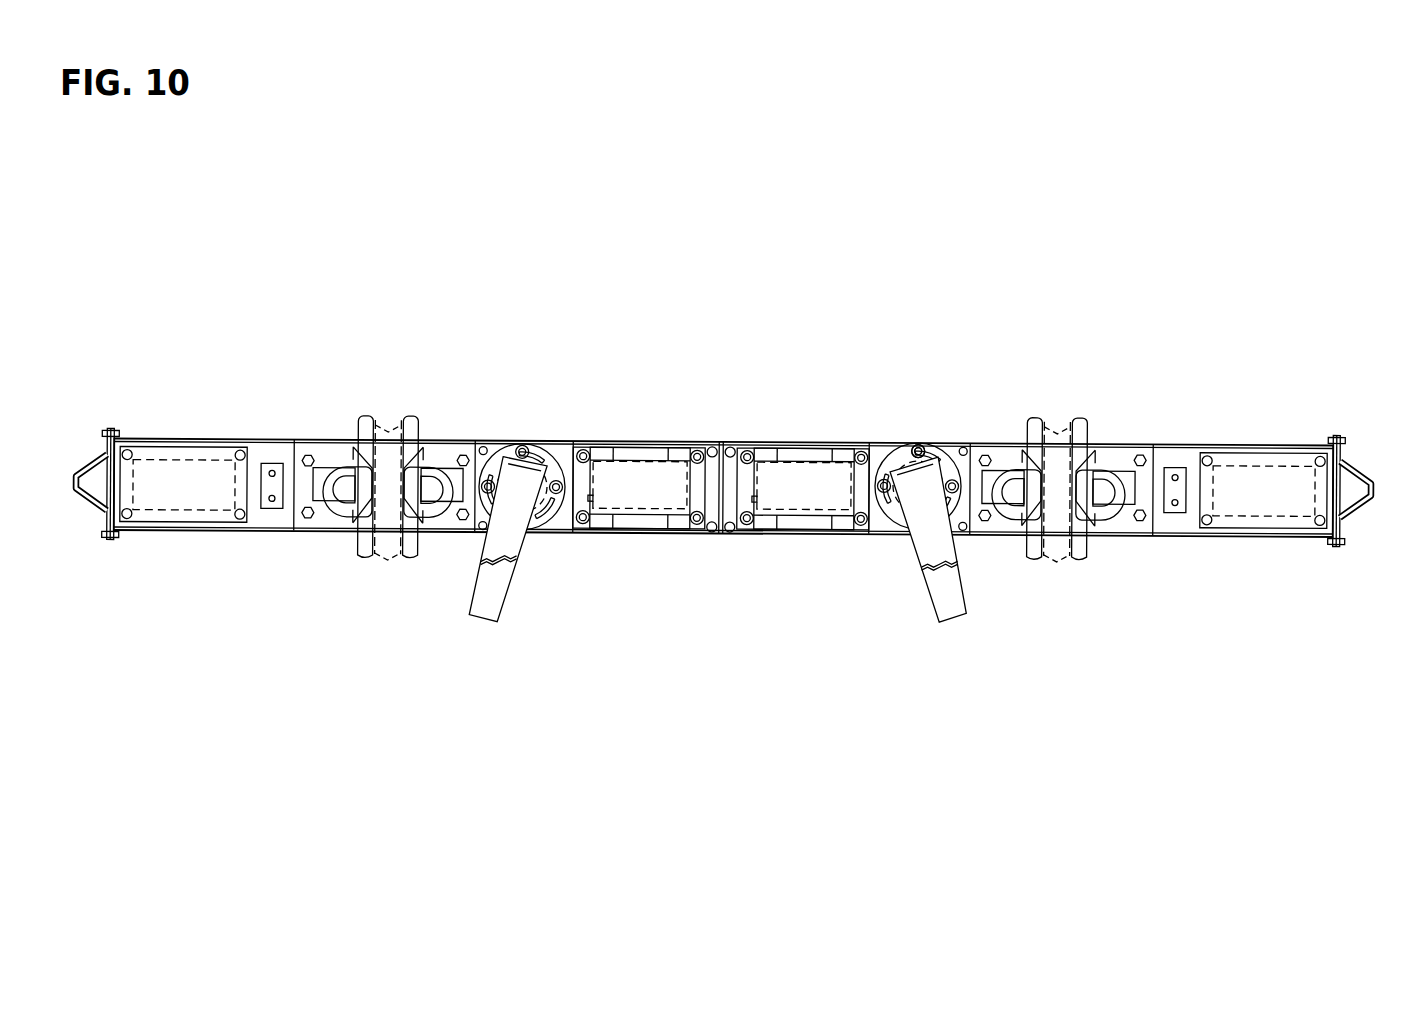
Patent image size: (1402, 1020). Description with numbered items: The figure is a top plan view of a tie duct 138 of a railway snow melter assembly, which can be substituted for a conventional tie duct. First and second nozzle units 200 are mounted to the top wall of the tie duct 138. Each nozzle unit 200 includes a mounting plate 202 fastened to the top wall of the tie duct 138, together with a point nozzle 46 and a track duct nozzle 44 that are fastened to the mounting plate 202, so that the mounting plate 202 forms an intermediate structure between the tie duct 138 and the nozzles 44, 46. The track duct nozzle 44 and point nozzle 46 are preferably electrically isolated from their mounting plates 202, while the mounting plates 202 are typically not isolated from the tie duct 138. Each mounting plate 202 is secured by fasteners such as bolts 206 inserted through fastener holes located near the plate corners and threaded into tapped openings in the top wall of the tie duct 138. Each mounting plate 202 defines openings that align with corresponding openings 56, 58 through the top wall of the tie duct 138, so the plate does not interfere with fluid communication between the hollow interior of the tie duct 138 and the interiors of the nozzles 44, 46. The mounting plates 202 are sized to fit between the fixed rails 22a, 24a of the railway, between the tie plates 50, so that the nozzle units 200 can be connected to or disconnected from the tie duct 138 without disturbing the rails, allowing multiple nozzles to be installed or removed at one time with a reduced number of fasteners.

The tie duct 138 is at (260, 441).
The tie plates 50 is at (320, 442).
The bolts 206 is at (484, 450).
The nozzle units 200 is at (756, 486).
The openings 56 is at (633, 463).
The openings 58 is at (928, 468).
The mounting plate 202 is at (563, 523).
The track duct nozzle 44 is at (640, 518).
The point nozzle 46 is at (492, 589).
The fixed rail 22a is at (375, 559).
The fixed rail 24a is at (1062, 560).